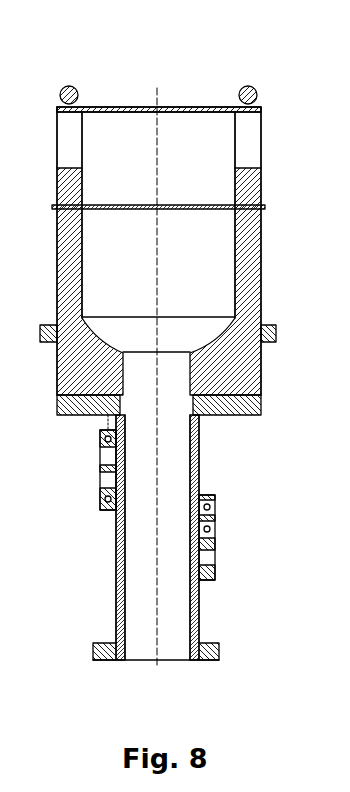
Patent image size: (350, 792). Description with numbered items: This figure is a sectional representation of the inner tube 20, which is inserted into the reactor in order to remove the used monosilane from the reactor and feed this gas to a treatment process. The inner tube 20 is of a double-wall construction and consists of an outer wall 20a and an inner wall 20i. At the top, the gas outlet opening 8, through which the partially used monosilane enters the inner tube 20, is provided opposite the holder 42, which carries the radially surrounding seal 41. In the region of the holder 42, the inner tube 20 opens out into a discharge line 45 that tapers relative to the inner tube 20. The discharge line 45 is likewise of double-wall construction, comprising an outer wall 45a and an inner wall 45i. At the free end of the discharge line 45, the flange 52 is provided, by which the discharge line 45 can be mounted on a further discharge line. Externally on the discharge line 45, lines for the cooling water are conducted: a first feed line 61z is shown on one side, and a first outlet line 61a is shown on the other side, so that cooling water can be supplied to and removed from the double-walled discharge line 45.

The gas outlet opening 8 is at (132, 106).
The inner tube 20 is at (261, 262).
The inner wall 20i is at (234, 140).
The outer wall 20a is at (261, 182).
The seal 41 is at (276, 332).
The holder 42 is at (247, 397).
The discharge line 45 is at (135, 585).
The inner wall 45i is at (133, 552).
The outer wall 45a is at (203, 473).
The flange 52 is at (97, 652).
The first feed line 61z is at (101, 468).
The first outlet line 61a is at (215, 543).